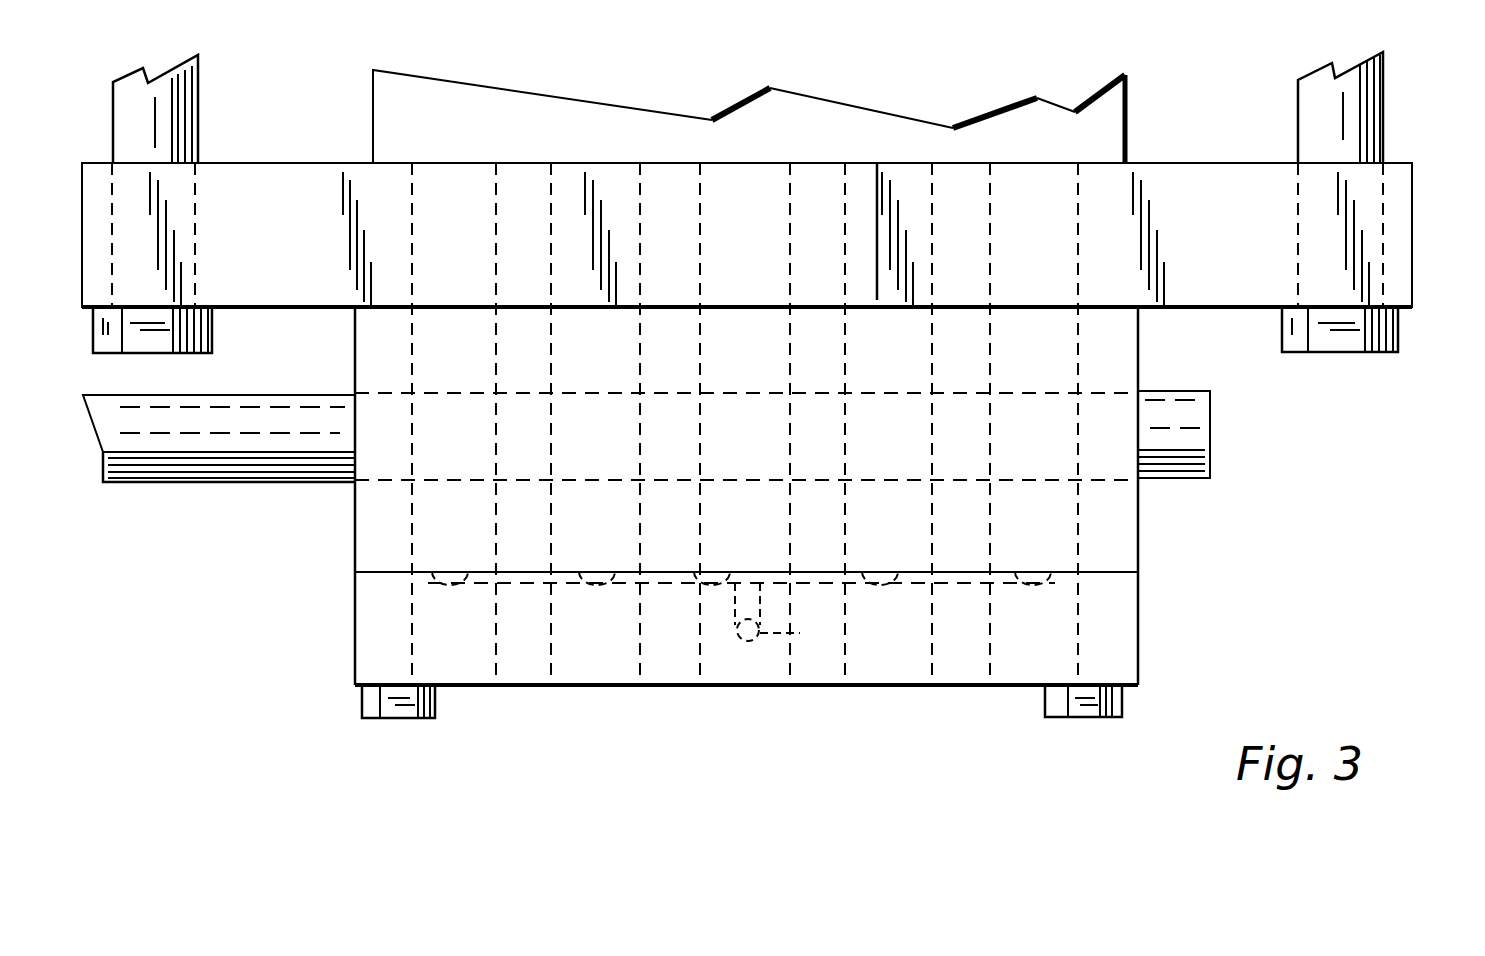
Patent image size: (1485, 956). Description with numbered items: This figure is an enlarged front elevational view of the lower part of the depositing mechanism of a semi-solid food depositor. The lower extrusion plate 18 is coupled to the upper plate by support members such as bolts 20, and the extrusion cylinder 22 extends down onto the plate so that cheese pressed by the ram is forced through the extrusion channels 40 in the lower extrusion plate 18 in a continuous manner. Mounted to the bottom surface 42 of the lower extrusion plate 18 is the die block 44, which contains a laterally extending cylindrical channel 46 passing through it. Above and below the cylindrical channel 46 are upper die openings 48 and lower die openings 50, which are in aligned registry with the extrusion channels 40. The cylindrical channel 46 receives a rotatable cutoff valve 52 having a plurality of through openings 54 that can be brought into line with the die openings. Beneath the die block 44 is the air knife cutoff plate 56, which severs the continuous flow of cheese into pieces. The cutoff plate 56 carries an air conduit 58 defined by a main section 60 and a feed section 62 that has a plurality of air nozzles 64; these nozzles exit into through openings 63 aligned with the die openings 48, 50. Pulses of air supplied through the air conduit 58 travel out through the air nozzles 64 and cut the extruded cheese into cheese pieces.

The lower extrusion plate 18 is at (1204, 162).
The bolts 20 is at (188, 118).
The extrusion cylinder 22 is at (1130, 128).
The extrusion channels 40 is at (588, 186).
The bottom surface 42 is at (1222, 310).
The die block 44 is at (1130, 545).
The cylindrical channel 46 is at (376, 484).
The upper die openings 48 is at (600, 333).
The lower die openings 50 is at (590, 515).
The rotatable cutoff valve 52 is at (238, 455).
The through openings 54 is at (590, 445).
The air knife cutoff plate 56 is at (1122, 630).
The air conduit 58 is at (784, 608).
The main section 60 is at (744, 636).
The feed section 62 is at (741, 610).
The through openings 63 is at (576, 656).
The air nozzles 64 is at (448, 585).